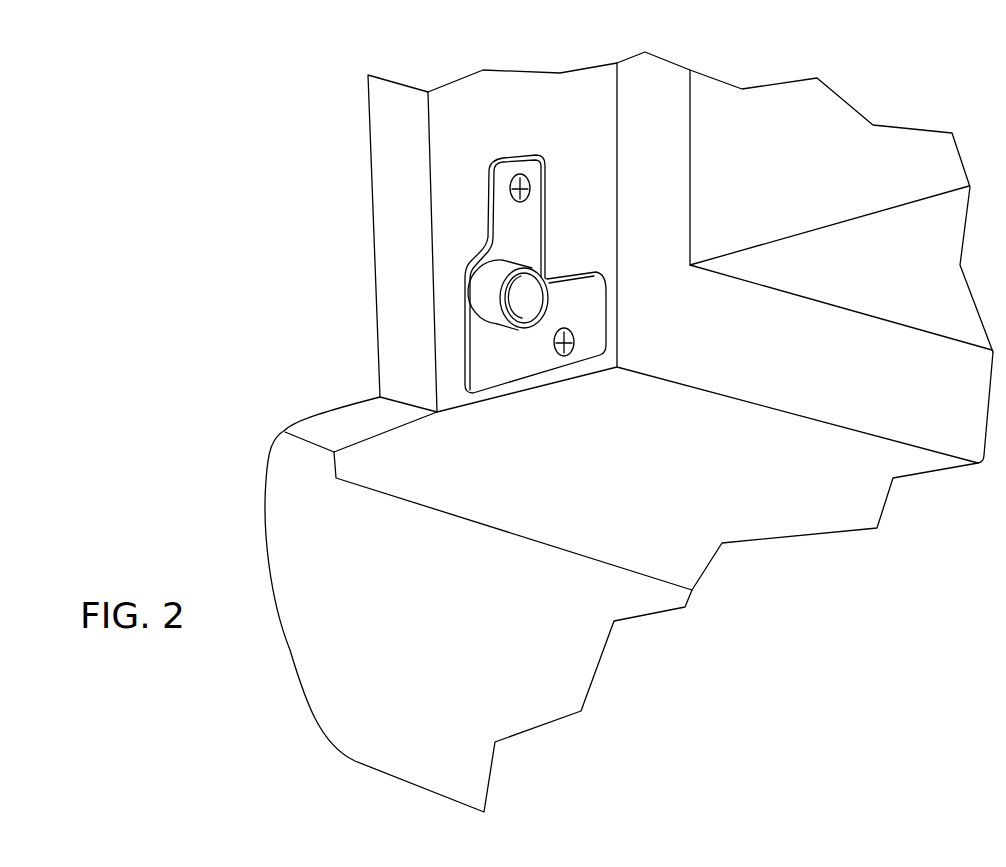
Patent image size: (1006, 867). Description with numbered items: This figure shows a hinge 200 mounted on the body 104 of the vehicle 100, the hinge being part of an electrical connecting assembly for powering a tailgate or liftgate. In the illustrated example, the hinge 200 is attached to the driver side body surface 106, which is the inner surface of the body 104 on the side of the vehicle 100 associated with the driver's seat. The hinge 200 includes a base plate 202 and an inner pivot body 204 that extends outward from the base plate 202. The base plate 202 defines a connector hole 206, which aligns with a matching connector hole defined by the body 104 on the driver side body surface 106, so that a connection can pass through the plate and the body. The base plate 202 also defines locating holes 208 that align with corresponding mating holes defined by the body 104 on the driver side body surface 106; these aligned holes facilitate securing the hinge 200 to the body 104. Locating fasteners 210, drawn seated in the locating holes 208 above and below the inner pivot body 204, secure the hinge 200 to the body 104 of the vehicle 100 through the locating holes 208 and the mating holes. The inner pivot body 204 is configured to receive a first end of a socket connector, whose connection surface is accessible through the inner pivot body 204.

The vehicle 100 is at (268, 158).
The body 104 is at (747, 128).
The driver side body surface 106 is at (484, 97).
The hinge 200 is at (517, 163).
The base plate 202 is at (530, 220).
The inner pivot body 204 is at (490, 288).
The connector hole 206 is at (547, 270).
The locating holes 208 is at (542, 185).
The locating fasteners 210 is at (510, 185).